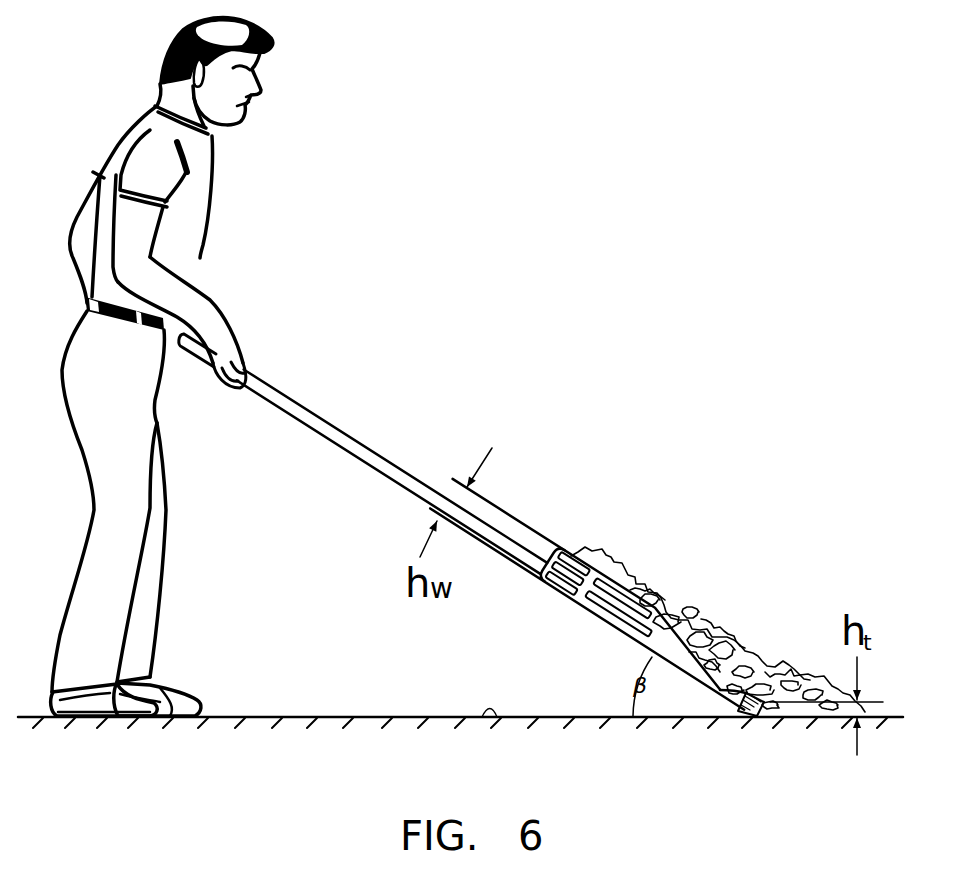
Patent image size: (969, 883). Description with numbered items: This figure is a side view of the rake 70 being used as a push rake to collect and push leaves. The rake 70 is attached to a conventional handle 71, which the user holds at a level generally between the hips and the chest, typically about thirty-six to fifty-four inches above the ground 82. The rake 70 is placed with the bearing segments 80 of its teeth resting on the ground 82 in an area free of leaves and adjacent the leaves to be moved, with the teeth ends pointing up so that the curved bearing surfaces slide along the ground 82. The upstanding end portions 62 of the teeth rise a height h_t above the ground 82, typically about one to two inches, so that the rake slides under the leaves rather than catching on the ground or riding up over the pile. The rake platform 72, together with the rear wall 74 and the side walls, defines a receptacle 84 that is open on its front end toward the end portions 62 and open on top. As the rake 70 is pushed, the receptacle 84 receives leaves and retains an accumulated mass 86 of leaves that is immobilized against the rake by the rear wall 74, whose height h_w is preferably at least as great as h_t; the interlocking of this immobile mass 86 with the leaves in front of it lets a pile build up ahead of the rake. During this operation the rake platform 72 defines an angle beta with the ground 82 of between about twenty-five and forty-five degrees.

The upstanding end portions of the teeth 62 is at (752, 697).
The rake 70 is at (505, 537).
The handle 71 is at (323, 441).
The rake platform 72 is at (578, 605).
The rear wall 74 is at (550, 558).
The bearing segments 80 is at (756, 717).
The ground 82 is at (487, 718).
The receptacle 84 is at (598, 565).
The accumulated mass of leaves 86 is at (617, 572).